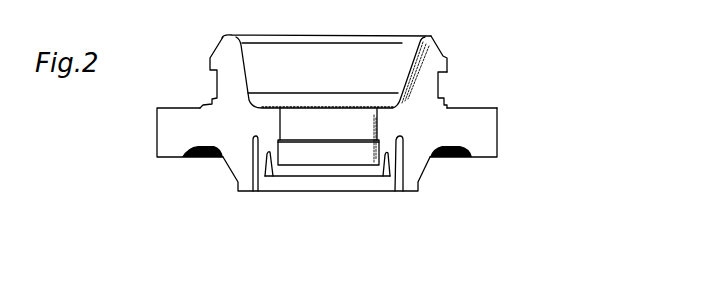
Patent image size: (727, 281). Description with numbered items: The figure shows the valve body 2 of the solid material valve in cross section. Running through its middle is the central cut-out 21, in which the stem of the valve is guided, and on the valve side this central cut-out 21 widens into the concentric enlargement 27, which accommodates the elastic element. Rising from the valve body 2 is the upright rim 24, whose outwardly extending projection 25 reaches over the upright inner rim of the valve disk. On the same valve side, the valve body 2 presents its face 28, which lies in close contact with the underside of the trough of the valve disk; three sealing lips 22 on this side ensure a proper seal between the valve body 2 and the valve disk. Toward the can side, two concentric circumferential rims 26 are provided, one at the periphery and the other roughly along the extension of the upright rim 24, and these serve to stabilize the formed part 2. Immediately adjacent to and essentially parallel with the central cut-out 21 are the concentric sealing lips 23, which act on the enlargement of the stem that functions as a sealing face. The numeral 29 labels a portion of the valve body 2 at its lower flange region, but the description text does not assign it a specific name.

The valve body 2 is at (144, 180).
The central cut-out 21 is at (280, 128).
The sealing lips 22 is at (447, 105).
The concentric sealing lips 23 is at (260, 178).
The upright rim 24 is at (428, 50).
The outwardly extending projection 25 is at (447, 58).
The concentric circumferential rims 26 is at (481, 155).
The concentric enlargement 27 is at (252, 108).
The face 28 is at (478, 106).
The flange portion 29 is at (243, 181).